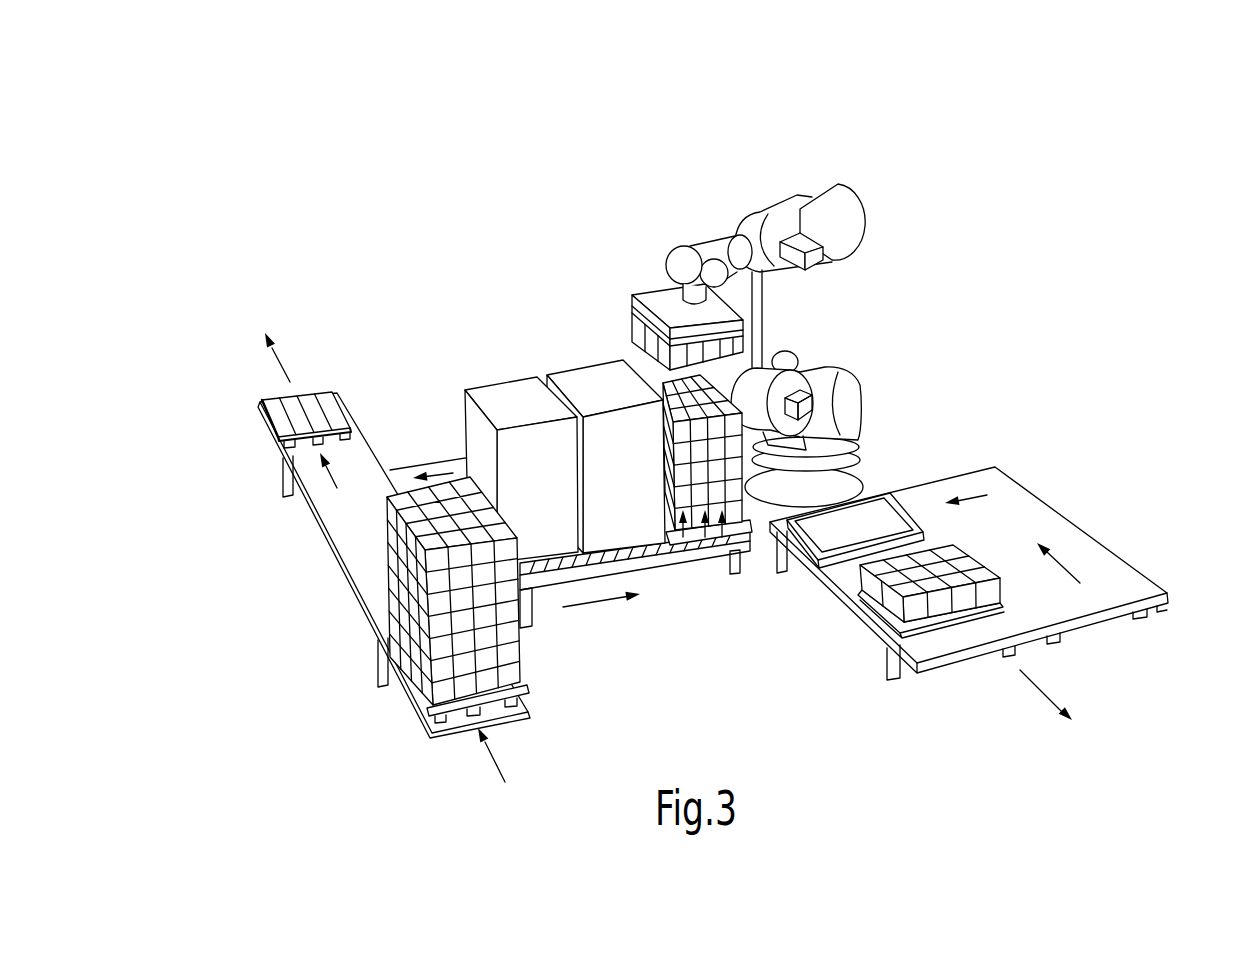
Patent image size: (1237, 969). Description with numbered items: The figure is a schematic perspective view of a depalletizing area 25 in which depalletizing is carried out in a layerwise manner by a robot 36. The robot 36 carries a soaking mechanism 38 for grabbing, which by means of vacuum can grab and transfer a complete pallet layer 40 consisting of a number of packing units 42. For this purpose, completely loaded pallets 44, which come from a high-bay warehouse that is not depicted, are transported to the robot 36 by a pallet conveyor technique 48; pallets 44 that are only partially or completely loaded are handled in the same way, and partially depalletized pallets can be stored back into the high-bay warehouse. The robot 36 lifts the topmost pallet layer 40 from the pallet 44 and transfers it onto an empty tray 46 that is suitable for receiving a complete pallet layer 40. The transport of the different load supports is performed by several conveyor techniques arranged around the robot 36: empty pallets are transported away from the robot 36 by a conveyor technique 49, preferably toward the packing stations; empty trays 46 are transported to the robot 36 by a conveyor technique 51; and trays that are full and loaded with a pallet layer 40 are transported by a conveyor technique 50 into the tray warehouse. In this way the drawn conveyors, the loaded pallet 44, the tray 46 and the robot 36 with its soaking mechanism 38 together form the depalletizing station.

The depalletizing area 25 is at (674, 428).
The robot 36 is at (865, 385).
The soaking mechanism 38 is at (653, 290).
The pallet layer 40 is at (616, 316).
The packing units 42 is at (683, 537).
The pallet 44 is at (515, 650).
The empty tray 46 is at (832, 558).
The pallet conveyor technique 48 is at (345, 580).
The conveyor technique 49 is at (263, 432).
The conveyor technique 50 is at (979, 619).
The conveyor technique 51 is at (1097, 612).